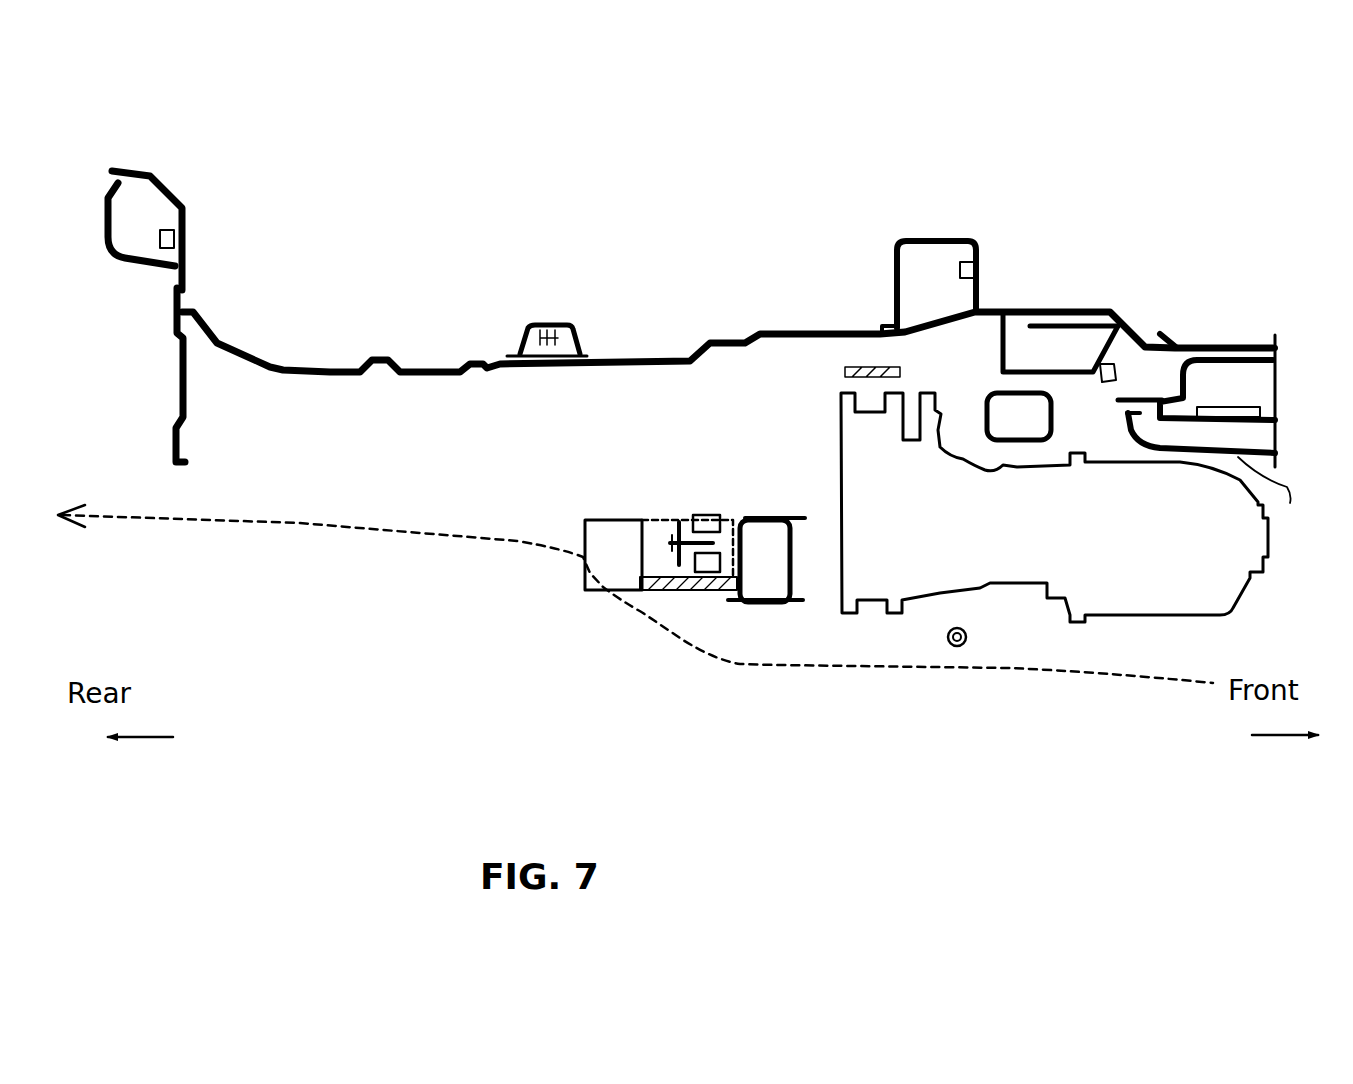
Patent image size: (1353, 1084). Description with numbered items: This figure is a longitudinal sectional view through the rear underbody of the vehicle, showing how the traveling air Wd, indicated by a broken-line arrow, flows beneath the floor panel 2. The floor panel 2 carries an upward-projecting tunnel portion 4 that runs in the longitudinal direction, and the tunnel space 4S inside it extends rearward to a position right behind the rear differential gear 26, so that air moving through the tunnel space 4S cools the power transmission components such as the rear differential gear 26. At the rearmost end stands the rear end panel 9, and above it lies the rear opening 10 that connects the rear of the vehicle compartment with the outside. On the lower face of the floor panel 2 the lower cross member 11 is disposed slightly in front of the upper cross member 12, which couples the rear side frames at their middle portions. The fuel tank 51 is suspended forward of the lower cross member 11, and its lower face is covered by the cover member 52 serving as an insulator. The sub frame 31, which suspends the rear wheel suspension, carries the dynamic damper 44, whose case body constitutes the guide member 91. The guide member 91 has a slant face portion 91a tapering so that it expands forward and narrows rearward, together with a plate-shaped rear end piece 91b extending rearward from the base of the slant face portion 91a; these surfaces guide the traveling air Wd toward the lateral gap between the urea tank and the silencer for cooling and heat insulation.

The floor panel 2 is at (788, 326).
The tunnel portion 4 is at (1208, 343).
The tunnel space 4S is at (1105, 442).
The rear end panel 9 is at (178, 357).
The rear opening 10 is at (110, 154).
The lower cross member 11 is at (1122, 347).
The upper cross member 12 is at (893, 278).
The rear differential gear 26 is at (1009, 590).
The sub frame 31 is at (770, 510).
The dynamic damper 44 is at (691, 509).
The fuel tank 51 is at (1223, 357).
The cover member 52 is at (1237, 455).
The guide member 91 is at (650, 596).
The slant face portion 91a is at (658, 522).
The rear end piece 91b is at (585, 537).
The traveling air Wd is at (423, 533).